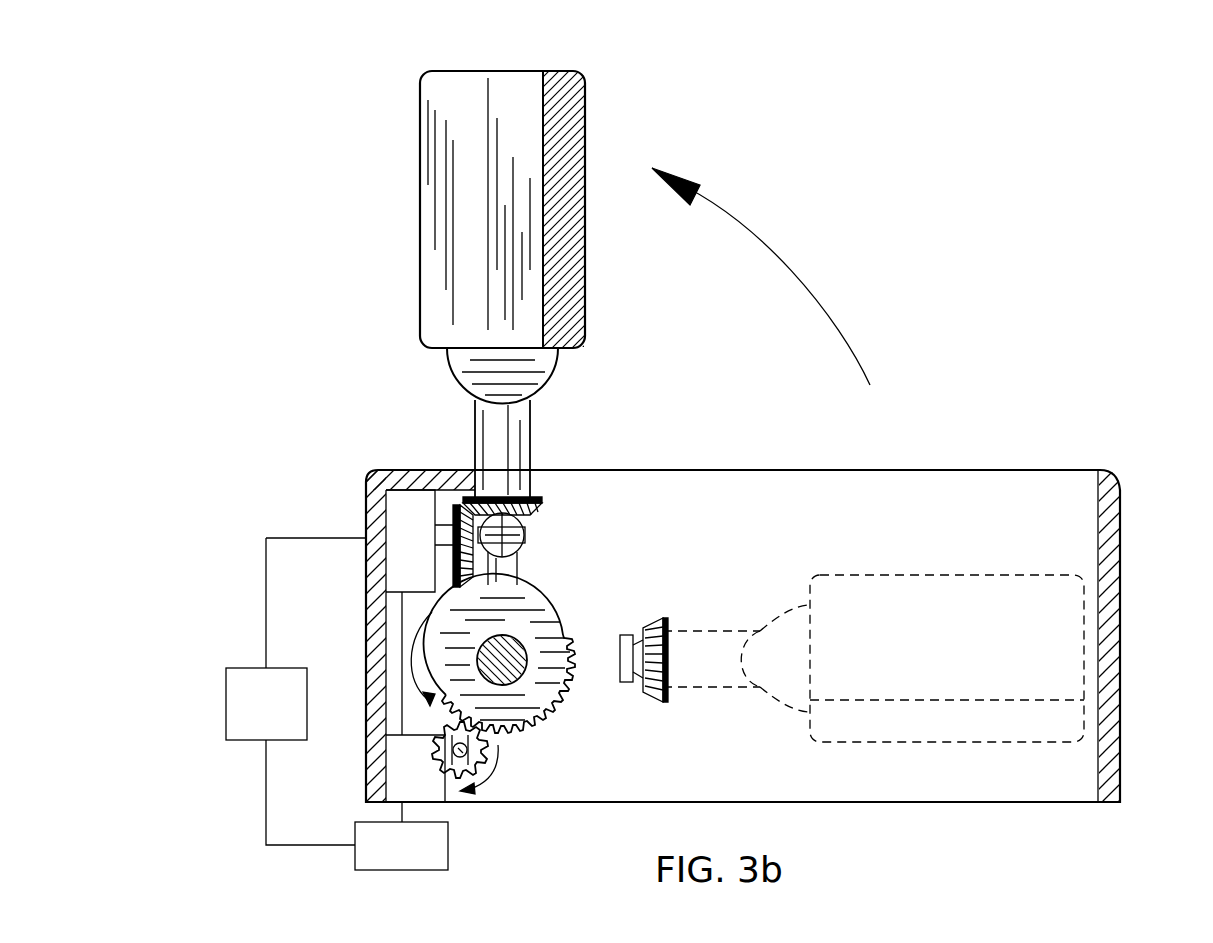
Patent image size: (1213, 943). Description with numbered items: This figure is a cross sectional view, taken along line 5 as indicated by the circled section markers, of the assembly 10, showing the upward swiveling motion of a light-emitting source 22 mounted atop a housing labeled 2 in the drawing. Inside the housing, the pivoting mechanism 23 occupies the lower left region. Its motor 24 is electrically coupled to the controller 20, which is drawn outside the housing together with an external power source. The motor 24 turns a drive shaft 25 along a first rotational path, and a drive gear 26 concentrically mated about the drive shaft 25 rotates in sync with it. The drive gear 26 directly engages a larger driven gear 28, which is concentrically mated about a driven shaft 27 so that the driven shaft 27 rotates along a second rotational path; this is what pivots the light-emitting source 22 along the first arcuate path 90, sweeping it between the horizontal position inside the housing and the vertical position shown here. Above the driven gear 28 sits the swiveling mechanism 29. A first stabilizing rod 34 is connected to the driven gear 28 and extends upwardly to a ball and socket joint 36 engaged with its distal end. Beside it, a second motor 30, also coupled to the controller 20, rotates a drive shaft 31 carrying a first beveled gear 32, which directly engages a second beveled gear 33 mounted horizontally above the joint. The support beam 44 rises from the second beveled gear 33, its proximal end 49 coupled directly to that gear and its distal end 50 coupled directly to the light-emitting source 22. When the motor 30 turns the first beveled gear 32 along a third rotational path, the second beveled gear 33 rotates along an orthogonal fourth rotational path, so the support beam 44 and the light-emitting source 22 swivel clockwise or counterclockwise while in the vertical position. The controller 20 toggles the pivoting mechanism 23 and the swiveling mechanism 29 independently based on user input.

The assembly 10 is at (1124, 178).
The housing 2 is at (1115, 490).
The light-emitting source 22 is at (572, 140).
The first arcuate path 90 is at (800, 276).
The distal end of support beam 50 is at (478, 410).
The support beam 44 is at (515, 430).
The proximal end of support beam 49 is at (518, 462).
The section line 5 is at (585, 565).
The swiveling mechanism 29 is at (555, 506).
The second beveled gear 33 is at (463, 492).
The ball and socket joint 36 is at (525, 535).
The first stabilizing rod 34 is at (505, 576).
The driven gear 28 is at (555, 675).
The driven shaft 27 is at (500, 663).
The drive gear 26 is at (466, 752).
The drive shaft 25 is at (510, 777).
The motor 24 is at (430, 785).
The drive shaft 31 is at (363, 530).
The motor 30 is at (363, 507).
The first beveled gear 32 is at (363, 570).
The controller 20 is at (430, 858).
The pivoting mechanism 23 is at (550, 810).